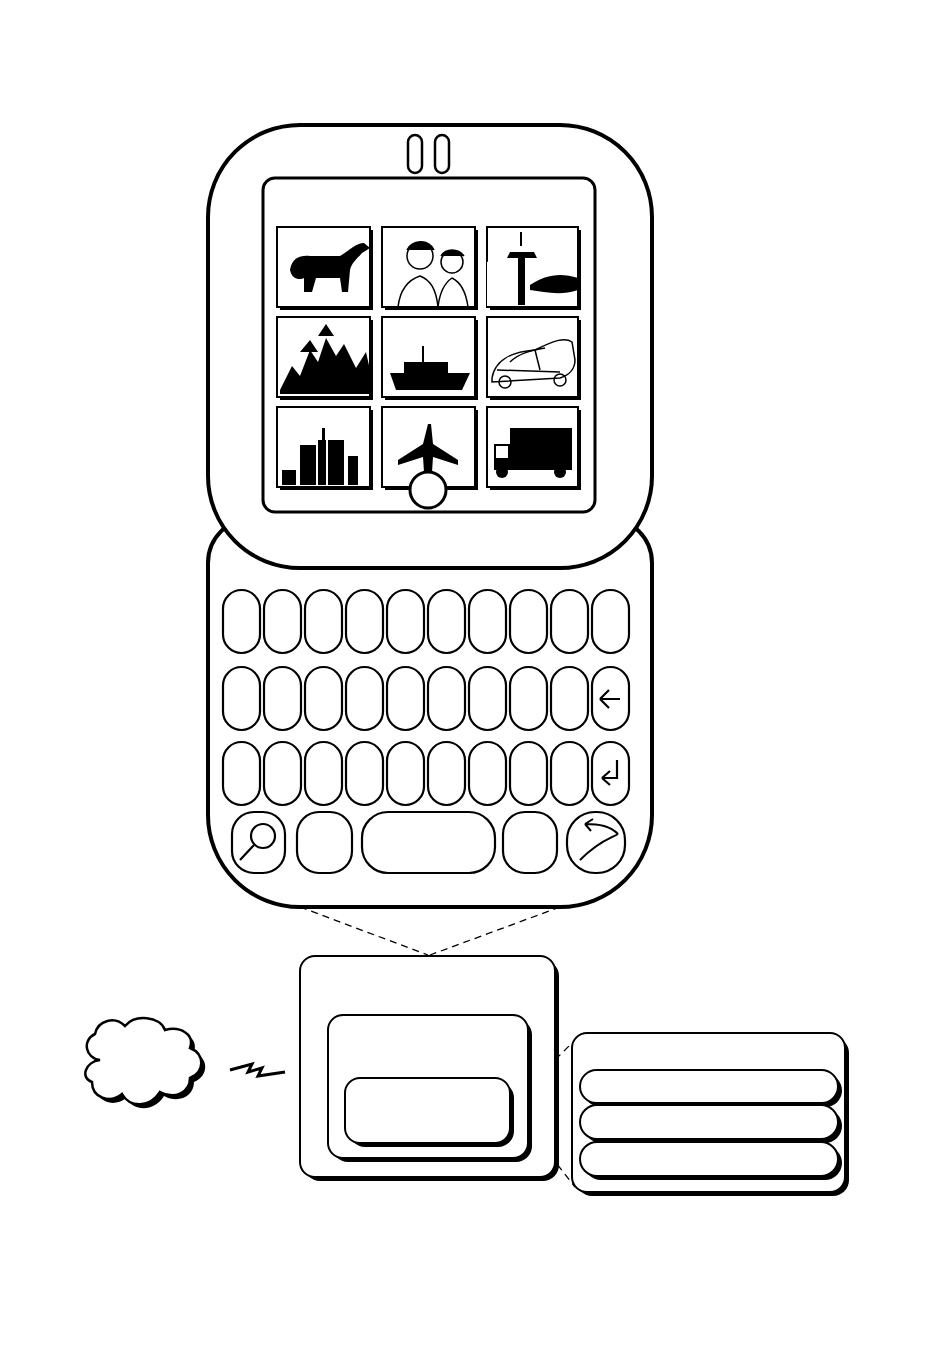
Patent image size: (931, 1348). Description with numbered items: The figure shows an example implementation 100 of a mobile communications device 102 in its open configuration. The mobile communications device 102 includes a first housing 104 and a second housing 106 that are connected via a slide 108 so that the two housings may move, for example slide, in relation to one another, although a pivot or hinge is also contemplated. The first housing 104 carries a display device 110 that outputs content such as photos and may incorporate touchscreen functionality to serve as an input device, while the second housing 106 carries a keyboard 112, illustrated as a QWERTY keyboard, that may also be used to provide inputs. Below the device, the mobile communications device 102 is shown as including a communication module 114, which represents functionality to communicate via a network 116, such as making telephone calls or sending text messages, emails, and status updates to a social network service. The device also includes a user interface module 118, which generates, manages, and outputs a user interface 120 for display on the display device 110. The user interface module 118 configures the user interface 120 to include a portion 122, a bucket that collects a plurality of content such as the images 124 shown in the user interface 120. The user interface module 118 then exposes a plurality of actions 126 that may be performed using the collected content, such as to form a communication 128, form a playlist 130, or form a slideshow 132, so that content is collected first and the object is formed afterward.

The example implementation 100 is at (158, 70).
The mobile communications device 102 is at (429, 1068).
The first housing 104 is at (225, 172).
The second housing 106 is at (215, 570).
The slide 108 is at (637, 525).
The display device 110 is at (268, 350).
The keyboard 112 is at (668, 582).
The communication module 114 is at (430, 1088).
The network 116 is at (185, 1063).
The user interface module 118 is at (429, 1112).
The user interface 120 is at (430, 204).
The portion 122 is at (428, 512).
The images 124 is at (218, 233).
The actions 126 is at (710, 1114).
The form a communication 128 is at (711, 1088).
The form a playlist 130 is at (711, 1124).
The form a slideshow 132 is at (711, 1161).